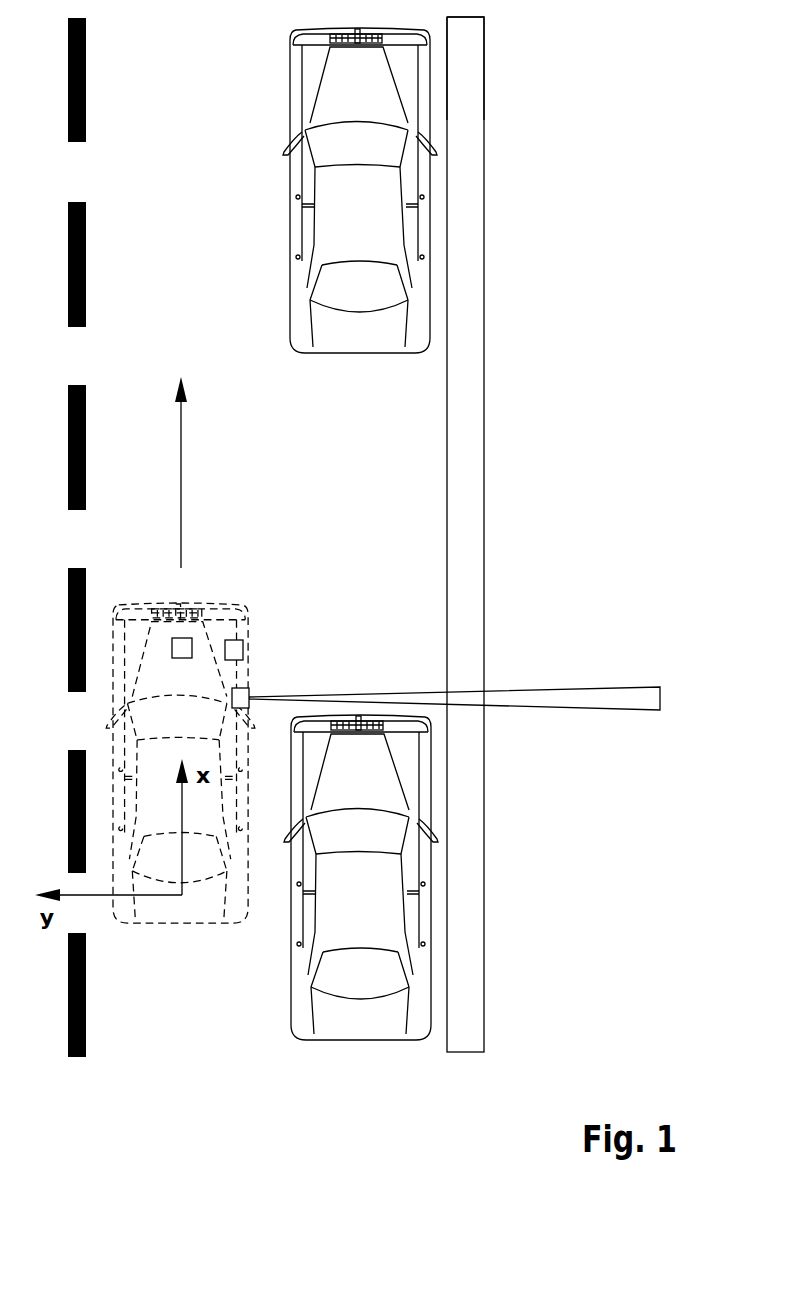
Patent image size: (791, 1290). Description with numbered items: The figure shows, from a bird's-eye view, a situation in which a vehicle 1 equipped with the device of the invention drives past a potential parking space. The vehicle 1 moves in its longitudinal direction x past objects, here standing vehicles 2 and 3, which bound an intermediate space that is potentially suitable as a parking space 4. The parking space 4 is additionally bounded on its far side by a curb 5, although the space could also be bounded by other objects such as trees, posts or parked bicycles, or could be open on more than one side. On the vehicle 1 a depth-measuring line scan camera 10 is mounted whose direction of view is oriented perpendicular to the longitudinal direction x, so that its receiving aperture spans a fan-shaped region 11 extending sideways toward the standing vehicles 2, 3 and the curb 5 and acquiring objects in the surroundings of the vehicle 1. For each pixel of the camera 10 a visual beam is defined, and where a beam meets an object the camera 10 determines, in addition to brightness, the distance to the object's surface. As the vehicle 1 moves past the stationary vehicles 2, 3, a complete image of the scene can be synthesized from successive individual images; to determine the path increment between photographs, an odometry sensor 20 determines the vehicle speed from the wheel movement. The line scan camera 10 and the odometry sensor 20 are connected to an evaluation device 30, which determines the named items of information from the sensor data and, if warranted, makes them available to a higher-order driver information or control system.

The vehicle 1 is at (232, 915).
The standing vehicle 2 is at (289, 178).
The standing vehicle 3 is at (357, 1042).
The parking space 4 is at (425, 548).
The curb 5 is at (470, 57).
The depth-measuring line scan camera 10 is at (243, 688).
The fan-shaped region 11 is at (597, 707).
The odometry sensor 20 is at (224, 645).
The evaluation device 30 is at (173, 645).